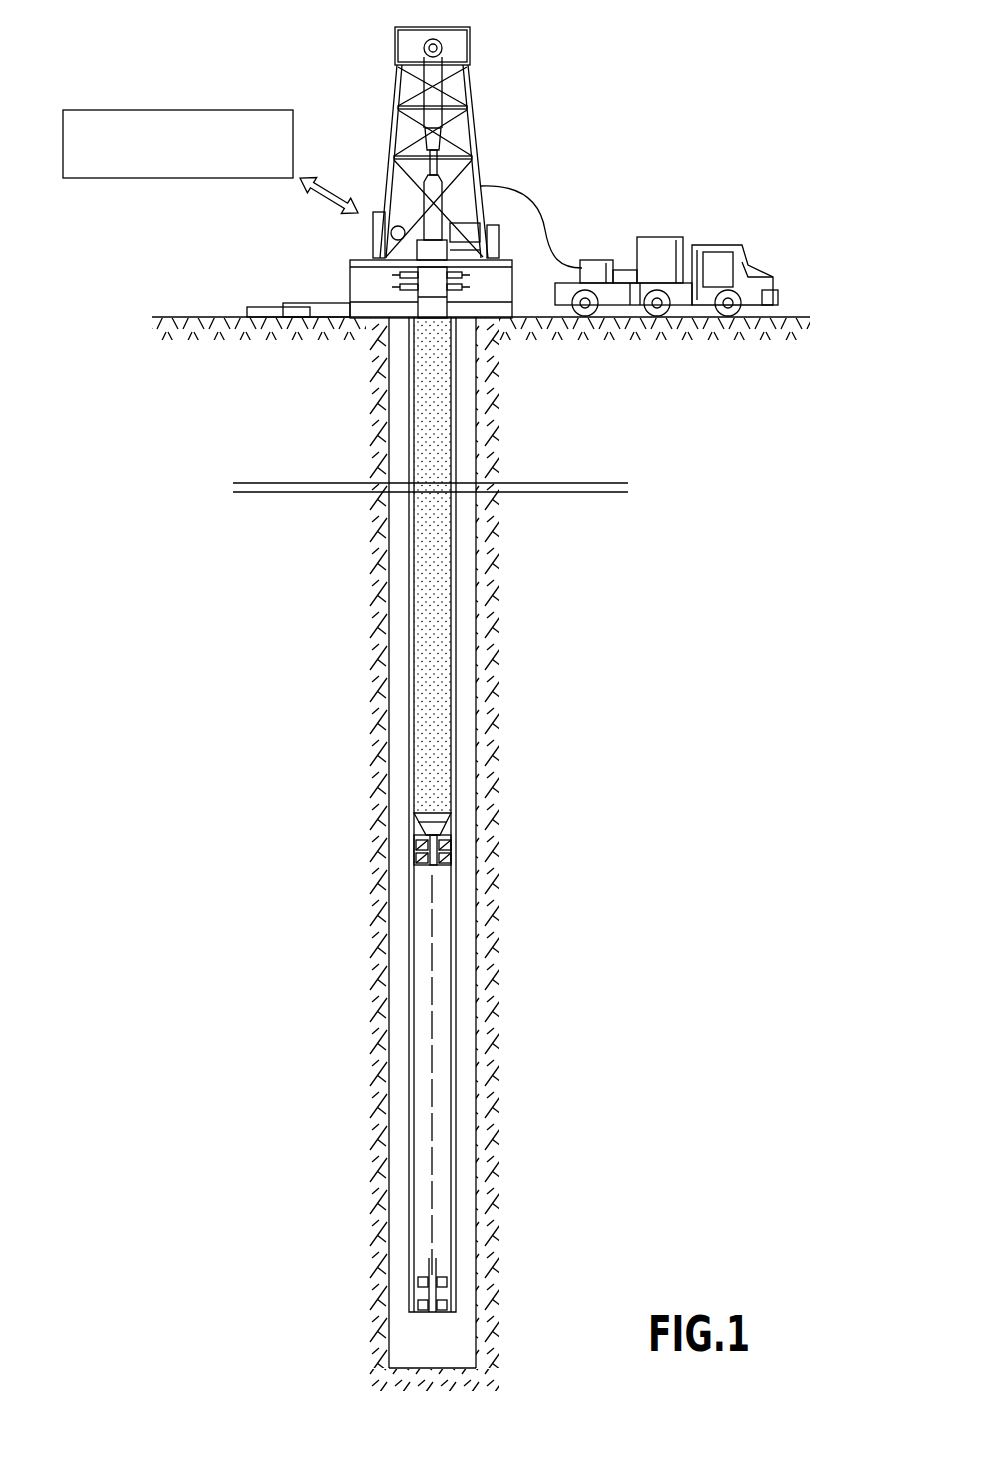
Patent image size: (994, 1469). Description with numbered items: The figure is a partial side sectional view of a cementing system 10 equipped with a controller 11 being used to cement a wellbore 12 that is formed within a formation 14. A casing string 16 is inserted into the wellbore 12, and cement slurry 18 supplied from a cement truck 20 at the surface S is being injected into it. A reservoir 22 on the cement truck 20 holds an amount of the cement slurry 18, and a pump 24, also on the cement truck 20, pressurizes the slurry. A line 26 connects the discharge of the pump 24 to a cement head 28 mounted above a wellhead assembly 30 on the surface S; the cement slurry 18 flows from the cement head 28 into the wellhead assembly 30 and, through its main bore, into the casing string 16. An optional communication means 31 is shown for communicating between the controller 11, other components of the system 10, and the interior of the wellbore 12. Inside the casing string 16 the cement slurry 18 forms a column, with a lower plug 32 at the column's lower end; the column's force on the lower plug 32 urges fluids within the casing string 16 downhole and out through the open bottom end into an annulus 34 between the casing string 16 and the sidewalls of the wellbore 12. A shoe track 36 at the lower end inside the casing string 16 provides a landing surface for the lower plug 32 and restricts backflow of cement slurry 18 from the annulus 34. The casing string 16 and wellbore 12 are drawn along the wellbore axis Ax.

The cementing system 10 is at (706, 116).
The controller 11 is at (178, 110).
The wellbore 12 is at (392, 944).
The formation 14 is at (490, 1125).
The casing string 16 is at (458, 962).
The cement slurry 18 is at (425, 570).
The cement truck 20 is at (629, 231).
The reservoir 22 is at (667, 250).
The pump 24 is at (603, 258).
The line 26 is at (525, 190).
The cement head 28 is at (480, 157).
The wellhead assembly 30 is at (486, 300).
The communication means 31 is at (327, 200).
The lower plug 32 is at (458, 828).
The annulus 34 is at (463, 640).
The shoe track 36 is at (404, 1297).
The surface S is at (198, 315).
The wellbore axis Ax is at (435, 1045).